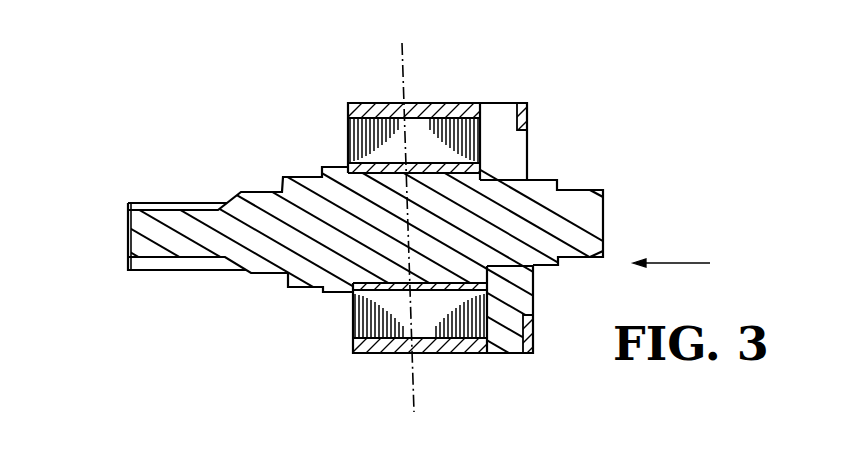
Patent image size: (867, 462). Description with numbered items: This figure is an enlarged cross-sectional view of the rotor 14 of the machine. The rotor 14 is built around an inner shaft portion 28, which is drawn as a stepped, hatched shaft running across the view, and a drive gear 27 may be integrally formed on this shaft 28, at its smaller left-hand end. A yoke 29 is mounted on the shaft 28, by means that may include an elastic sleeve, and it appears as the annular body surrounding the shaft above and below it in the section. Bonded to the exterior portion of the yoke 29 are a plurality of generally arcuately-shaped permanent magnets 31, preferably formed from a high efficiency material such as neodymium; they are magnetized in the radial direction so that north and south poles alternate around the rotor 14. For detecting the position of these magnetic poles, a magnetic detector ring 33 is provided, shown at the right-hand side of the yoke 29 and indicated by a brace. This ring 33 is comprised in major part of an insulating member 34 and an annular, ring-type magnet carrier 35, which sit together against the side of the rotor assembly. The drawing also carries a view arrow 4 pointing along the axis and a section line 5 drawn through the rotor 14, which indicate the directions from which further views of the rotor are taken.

The view direction arrow 4 is at (671, 252).
The section line 5- 5 is at (399, 43).
The rotor 14 is at (433, 97).
The drive gear 27 is at (150, 202).
The inner shaft portion 28 is at (272, 276).
The yoke 29 is at (353, 320).
The permanent magnets 31 is at (457, 353).
The magnetic detector ring 33 is at (563, 97).
The insulating member 34 is at (496, 102).
The magnet carrier 35 is at (542, 101).